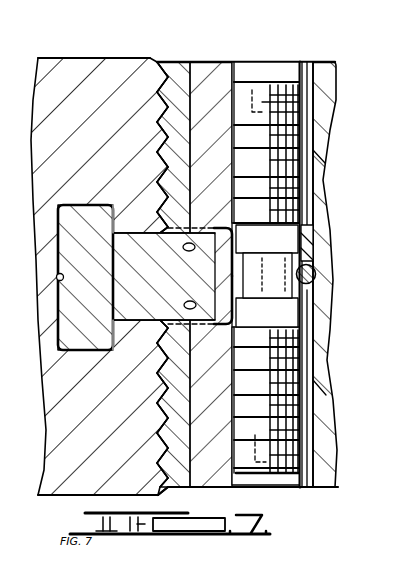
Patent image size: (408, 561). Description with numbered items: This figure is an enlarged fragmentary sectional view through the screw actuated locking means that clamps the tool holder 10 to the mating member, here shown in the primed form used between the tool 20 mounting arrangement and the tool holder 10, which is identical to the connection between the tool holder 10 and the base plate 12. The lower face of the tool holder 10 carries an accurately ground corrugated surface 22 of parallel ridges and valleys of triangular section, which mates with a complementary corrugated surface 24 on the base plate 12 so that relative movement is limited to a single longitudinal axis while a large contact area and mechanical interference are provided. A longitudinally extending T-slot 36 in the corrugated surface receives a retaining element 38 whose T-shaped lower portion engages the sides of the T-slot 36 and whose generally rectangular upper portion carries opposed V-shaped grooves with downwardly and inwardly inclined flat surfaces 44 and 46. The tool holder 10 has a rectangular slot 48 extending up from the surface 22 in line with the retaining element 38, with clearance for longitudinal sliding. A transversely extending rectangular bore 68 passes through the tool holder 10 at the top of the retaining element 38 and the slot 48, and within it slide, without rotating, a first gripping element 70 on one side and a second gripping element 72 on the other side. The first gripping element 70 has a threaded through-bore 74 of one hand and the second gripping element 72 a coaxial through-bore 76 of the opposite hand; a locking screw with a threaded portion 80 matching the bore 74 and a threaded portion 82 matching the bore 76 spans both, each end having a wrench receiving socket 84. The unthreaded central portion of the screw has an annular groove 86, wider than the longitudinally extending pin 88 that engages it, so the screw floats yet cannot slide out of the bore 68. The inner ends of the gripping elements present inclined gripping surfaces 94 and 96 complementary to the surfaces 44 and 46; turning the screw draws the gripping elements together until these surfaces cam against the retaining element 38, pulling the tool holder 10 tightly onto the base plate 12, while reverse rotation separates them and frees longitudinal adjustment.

The tool holder 10 is at (105, 57).
The base plate 12 is at (328, 72).
The tool 20 is at (268, 247).
The corrugated surface 22 is at (161, 64).
The complementary corrugated surface 24 is at (166, 486).
The T-slot 36 is at (56, 277).
The retaining element 38 is at (120, 289).
The inclined surface 44 is at (183, 248).
The inclined surface 46 is at (184, 305).
The slot 48 is at (230, 271).
The bore 68 is at (193, 68).
The first gripping element 70 is at (220, 68).
The second gripping element 72 is at (218, 487).
The threaded through-bore 74 is at (304, 68).
The threaded through-bore 76 is at (301, 487).
The threaded portion 80 is at (323, 161).
The threaded portion 82 is at (318, 393).
The wrench receiving socket 84 is at (278, 70).
The annular groove 86 is at (315, 246).
The pin 88 is at (316, 276).
The gripping surface 94 is at (222, 255).
The gripping surface 96 is at (200, 300).